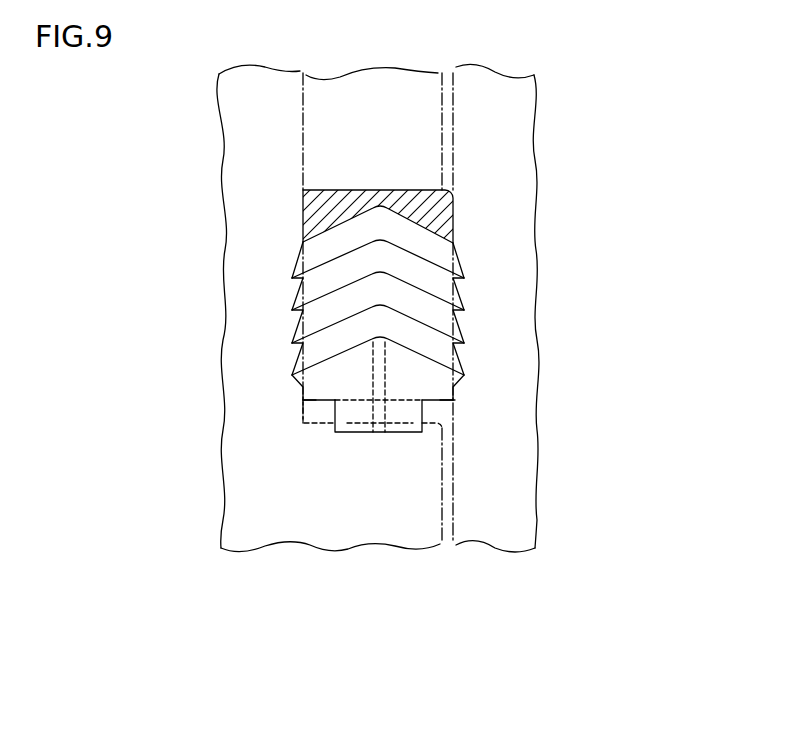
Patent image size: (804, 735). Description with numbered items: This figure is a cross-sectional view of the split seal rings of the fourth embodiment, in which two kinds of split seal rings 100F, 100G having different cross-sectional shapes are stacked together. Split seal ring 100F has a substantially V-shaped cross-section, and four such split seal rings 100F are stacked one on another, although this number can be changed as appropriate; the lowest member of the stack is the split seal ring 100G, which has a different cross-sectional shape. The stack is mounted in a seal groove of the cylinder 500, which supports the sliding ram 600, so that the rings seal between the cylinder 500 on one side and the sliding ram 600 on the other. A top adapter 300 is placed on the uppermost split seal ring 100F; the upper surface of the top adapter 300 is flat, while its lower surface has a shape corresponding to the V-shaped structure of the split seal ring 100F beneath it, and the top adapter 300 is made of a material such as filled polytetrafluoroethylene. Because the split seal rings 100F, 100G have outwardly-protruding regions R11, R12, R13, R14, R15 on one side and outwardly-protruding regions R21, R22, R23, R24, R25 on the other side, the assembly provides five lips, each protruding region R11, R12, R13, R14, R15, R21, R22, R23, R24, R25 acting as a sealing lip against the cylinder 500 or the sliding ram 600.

The top adapter 300 is at (453, 215).
The split seal ring 100F is at (446, 256).
The split seal ring 100G is at (456, 388).
The outwardly-protruding region R11 is at (466, 278).
The outwardly-protruding region R12 is at (466, 310).
The outwardly-protruding region R13 is at (466, 343).
The outwardly-protruding region R14 is at (466, 375).
The outwardly-protruding region R15 is at (456, 400).
The outwardly-protruding region R21 is at (291, 278).
The outwardly-protruding region R22 is at (291, 310).
The outwardly-protruding region R23 is at (291, 343).
The outwardly-protruding region R24 is at (291, 375).
The outwardly-protruding region R25 is at (303, 400).
The cylinder 500 is at (345, 507).
The sliding ram 600 is at (494, 505).